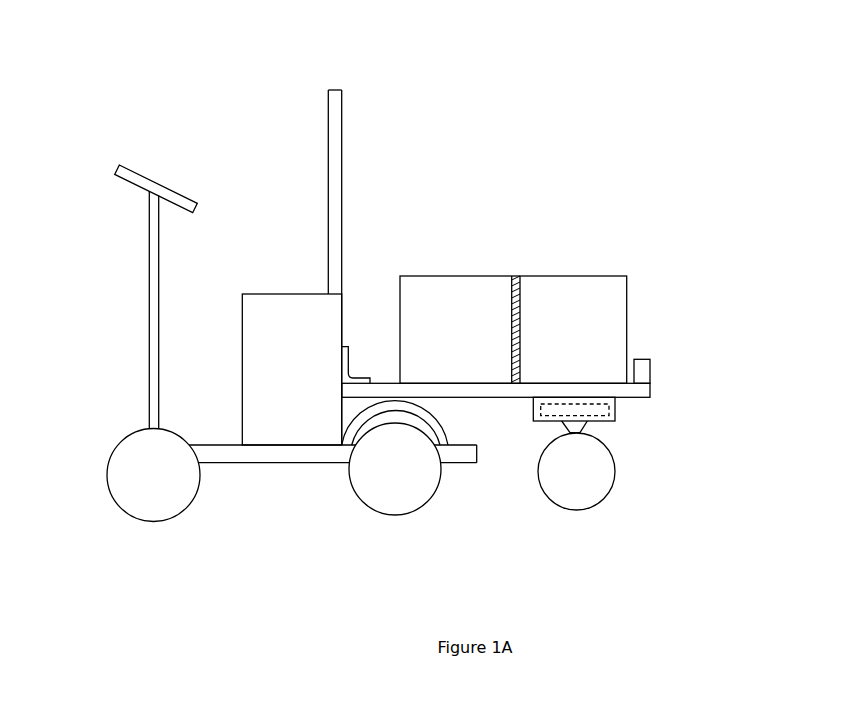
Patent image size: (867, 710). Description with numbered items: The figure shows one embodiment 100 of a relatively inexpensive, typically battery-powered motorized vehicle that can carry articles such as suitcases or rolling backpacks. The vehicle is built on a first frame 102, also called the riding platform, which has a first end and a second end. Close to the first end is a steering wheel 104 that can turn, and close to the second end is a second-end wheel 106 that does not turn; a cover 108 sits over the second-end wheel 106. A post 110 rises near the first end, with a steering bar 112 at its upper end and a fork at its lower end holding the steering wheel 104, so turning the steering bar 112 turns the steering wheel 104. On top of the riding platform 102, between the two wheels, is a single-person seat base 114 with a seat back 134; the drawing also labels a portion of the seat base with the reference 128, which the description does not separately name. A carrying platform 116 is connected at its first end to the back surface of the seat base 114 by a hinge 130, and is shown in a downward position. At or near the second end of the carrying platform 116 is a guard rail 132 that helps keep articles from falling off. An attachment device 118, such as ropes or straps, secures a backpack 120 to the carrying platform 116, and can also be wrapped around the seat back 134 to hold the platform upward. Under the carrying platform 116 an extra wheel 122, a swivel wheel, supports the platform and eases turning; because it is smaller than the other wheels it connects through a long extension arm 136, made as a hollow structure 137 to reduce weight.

The motorized vehicle embodiment 100 is at (712, 48).
The first frame 102 is at (284, 466).
The steering wheel 104 is at (153, 475).
The second-end wheel 106 is at (395, 469).
The cover 108 is at (440, 435).
The post 110 is at (141, 312).
The steering bar 112 is at (141, 164).
The seat base 114 is at (291, 369).
The carrying platform 116 is at (652, 390).
The attachment device 118 is at (520, 297).
The backpack 120 is at (513, 329).
The extra wheel 122 is at (576, 471).
The housing top 128 is at (291, 311).
The hinge 130 is at (348, 361).
The guard rail 132 is at (648, 358).
The seat back 134 is at (335, 137).
The extension arm 136 is at (615, 410).
The hollow structure 137 is at (598, 417).